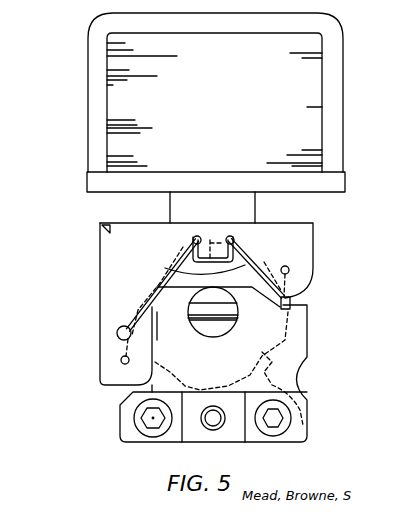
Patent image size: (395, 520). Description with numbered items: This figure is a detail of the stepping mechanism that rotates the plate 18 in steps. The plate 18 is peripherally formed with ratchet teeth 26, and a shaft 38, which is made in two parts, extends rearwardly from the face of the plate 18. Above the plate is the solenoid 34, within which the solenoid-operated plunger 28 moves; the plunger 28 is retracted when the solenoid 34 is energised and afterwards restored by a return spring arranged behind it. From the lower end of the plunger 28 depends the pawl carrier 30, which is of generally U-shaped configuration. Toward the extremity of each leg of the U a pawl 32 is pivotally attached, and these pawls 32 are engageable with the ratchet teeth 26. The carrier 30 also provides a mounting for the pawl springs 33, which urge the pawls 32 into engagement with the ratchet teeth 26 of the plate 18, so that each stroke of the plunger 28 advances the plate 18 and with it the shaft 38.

The plate 18 is at (300, 380).
The ratchet teeth 26 is at (306, 422).
The solenoid-operated plunger 28 is at (243, 212).
The pawl carrier 30 is at (117, 302).
The pawl 32 is at (112, 352).
The pawl spring 33 is at (170, 268).
The solenoid 34 is at (227, 116).
The shaft 38 is at (237, 317).